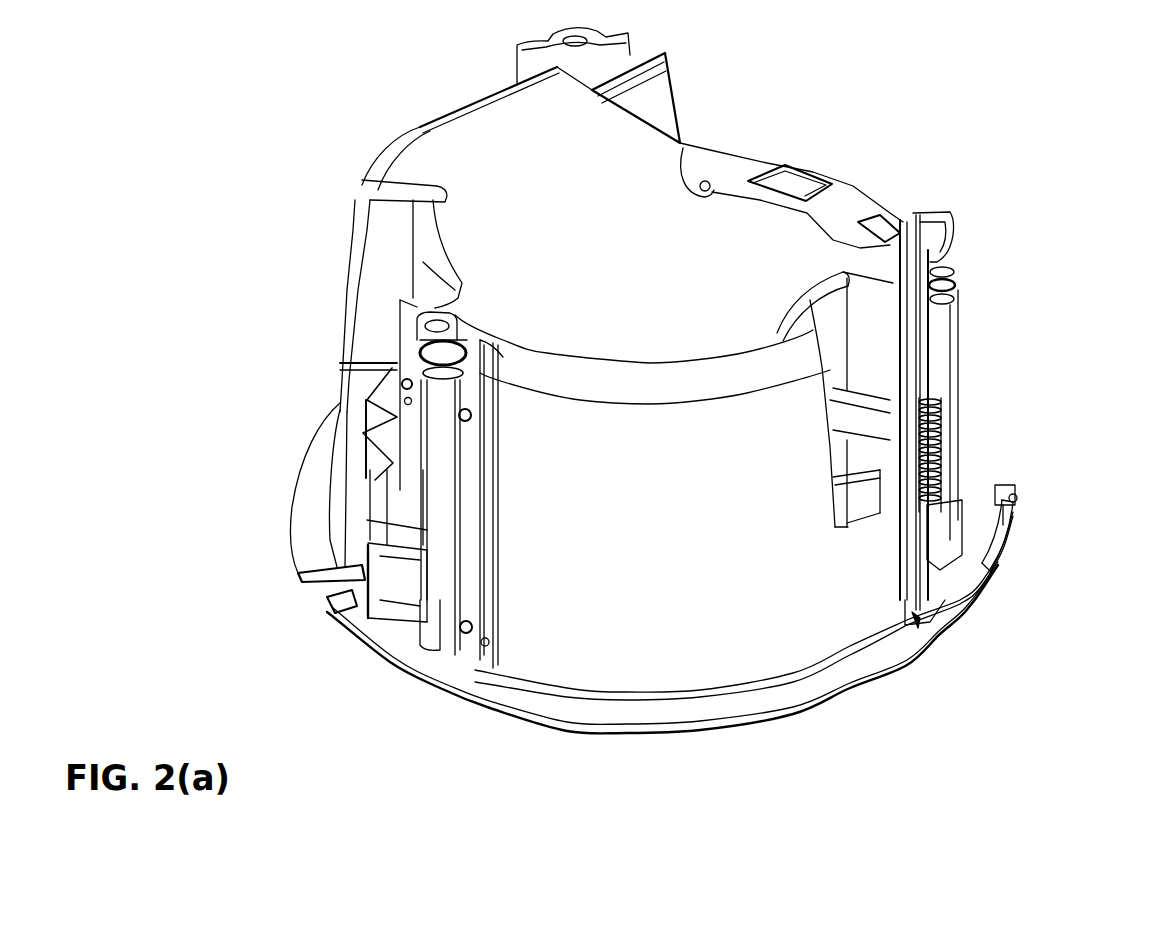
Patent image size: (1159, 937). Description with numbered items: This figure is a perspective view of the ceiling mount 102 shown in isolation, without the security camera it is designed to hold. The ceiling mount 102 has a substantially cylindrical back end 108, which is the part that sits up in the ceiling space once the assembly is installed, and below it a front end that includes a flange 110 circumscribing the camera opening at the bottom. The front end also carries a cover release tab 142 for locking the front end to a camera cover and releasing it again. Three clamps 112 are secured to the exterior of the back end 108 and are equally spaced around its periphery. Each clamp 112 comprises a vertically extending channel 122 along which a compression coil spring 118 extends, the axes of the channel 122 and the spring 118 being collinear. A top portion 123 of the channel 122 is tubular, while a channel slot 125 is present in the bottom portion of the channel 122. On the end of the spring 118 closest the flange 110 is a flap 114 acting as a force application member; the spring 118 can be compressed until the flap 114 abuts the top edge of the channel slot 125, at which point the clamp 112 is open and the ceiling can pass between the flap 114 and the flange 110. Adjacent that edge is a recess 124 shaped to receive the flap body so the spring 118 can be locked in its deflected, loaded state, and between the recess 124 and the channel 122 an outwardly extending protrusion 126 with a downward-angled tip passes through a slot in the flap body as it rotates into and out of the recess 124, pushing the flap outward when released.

The ceiling mount 102 is at (228, 162).
The back end 108 is at (482, 170).
The flange 110 is at (770, 697).
The clamp 112 is at (514, 30).
The flap 114 is at (300, 560).
The compression coil spring 118 is at (1010, 500).
The channel 122 is at (475, 542).
The top portion of the channel 123 is at (435, 418).
The recess 124 is at (352, 437).
The channel slot 125 is at (420, 550).
The protrusion 126 is at (380, 480).
The cover release tab 142 is at (1013, 497).